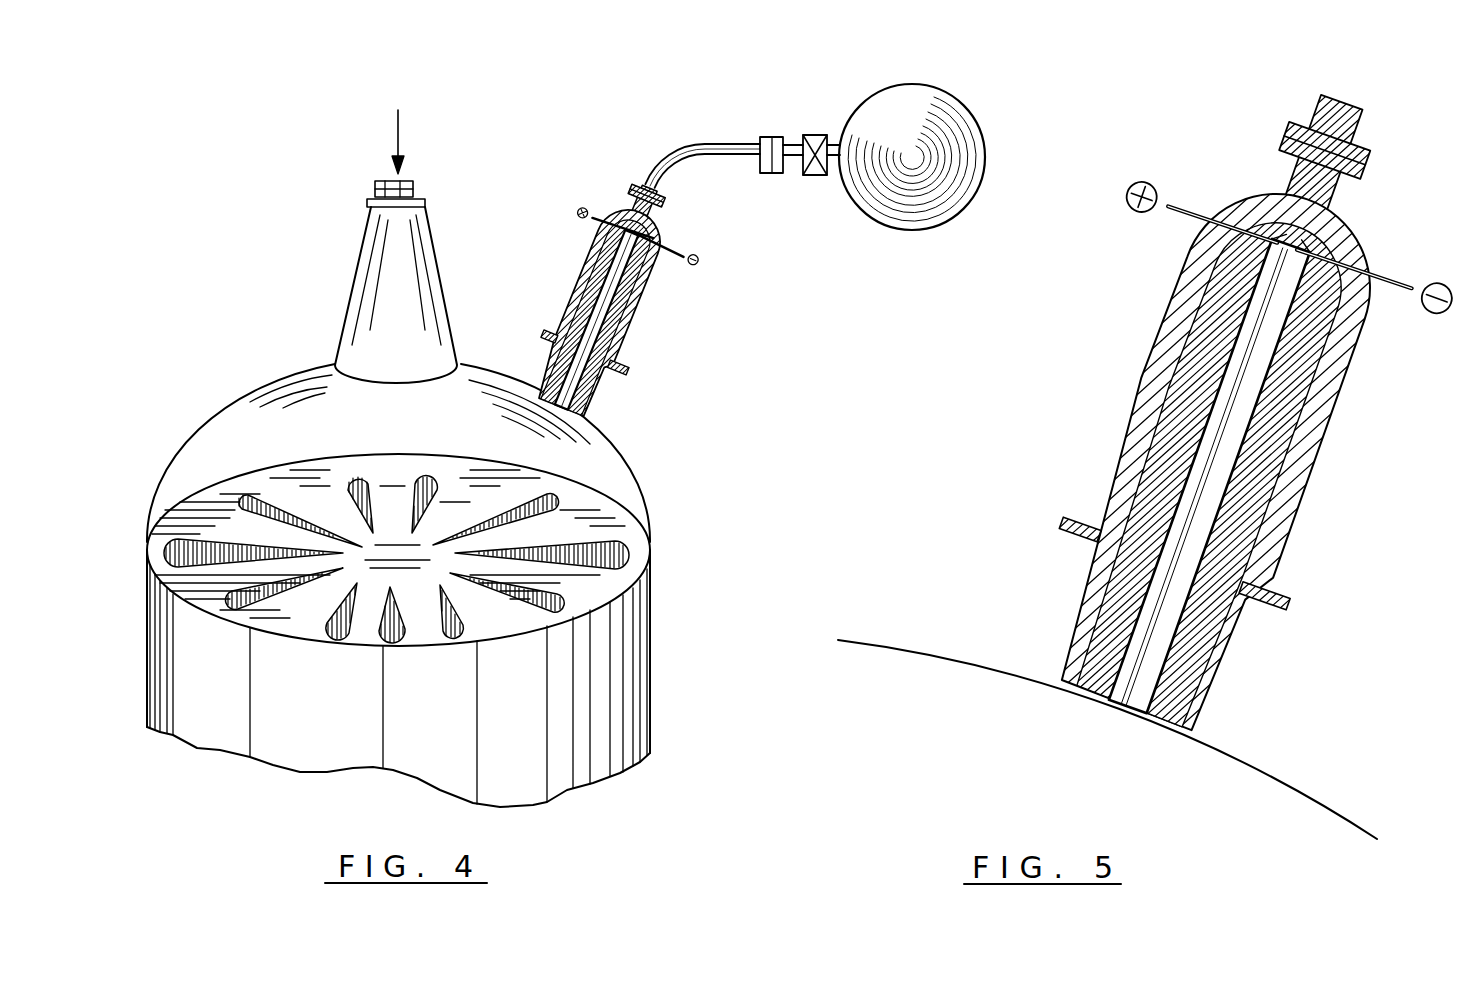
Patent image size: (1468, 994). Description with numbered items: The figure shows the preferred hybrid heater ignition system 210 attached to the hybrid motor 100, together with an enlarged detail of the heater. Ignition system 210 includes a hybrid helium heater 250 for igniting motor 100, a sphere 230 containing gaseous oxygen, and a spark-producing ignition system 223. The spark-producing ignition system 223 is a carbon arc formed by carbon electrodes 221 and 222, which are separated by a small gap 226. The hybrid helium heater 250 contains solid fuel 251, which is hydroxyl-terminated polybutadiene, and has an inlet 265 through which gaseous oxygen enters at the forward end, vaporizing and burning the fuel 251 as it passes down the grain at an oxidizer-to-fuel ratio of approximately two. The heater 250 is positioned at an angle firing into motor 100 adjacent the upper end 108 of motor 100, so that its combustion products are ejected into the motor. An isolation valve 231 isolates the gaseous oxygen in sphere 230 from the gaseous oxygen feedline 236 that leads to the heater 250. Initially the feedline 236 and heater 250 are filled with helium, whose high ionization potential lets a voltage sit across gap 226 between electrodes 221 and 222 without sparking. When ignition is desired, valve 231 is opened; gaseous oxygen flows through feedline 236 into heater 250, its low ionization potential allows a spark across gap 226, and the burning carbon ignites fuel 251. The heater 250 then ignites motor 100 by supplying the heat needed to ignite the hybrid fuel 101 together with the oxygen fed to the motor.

In FIG. 4, the hybrid motor 100 is at (648, 612).
In FIG. 4, the hybrid fuel 101 is at (573, 517).
In FIG. 4, the upper end 108 is at (245, 390).
In FIG. 5, the upper end 108 is at (942, 648).
In FIG. 4, the hybrid heater ignition system 210 is at (610, 79).
In FIG. 4, the carbon electrode 221 is at (617, 212).
In FIG. 5, the carbon electrode 221 is at (1215, 170).
In FIG. 4, the carbon electrode 222 is at (678, 252).
In FIG. 5, the carbon electrode 222 is at (1388, 280).
In FIG. 4, the spark-producing ignition system 223 is at (748, 263).
In FIG. 5, the spark-producing ignition system 223 is at (1130, 303).
In FIG. 5, the gap 226 is at (1305, 216).
In FIG. 4, the sphere 230 is at (952, 100).
In FIG. 4, the isolation valve 231 is at (818, 176).
In FIG. 4, the gaseous oxygen feedline 236 is at (735, 125).
In FIG. 4, the hybrid helium heater 250 is at (570, 290).
In FIG. 5, the hybrid helium heater 250 is at (1120, 440).
In FIG. 4, the solid fuel 251 is at (593, 393).
In FIG. 5, the solid fuel 251 is at (1218, 666).
In FIG. 4, the inlet 265 is at (637, 197).
In FIG. 5, the inlet 265 is at (1283, 140).